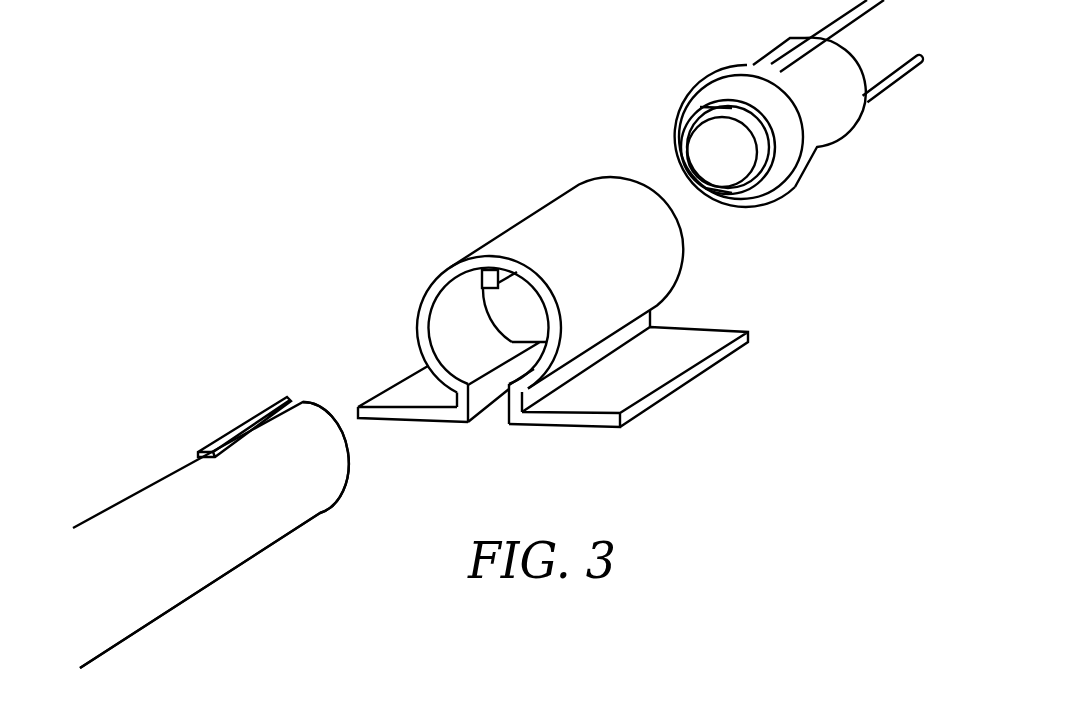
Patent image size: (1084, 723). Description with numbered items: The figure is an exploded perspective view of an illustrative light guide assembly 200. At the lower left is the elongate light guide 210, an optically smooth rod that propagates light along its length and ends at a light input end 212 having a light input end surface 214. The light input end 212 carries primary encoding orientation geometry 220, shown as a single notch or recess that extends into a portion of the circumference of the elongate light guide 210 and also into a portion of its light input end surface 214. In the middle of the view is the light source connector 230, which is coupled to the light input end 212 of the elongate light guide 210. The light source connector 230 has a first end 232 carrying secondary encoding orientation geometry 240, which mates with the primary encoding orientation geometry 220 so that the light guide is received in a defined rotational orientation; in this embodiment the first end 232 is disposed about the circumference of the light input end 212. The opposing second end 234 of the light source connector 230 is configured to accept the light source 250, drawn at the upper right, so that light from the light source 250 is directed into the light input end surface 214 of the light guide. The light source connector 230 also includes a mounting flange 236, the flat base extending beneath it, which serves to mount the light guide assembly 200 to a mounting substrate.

The light guide assembly 200 is at (332, 173).
The elongate light guide 210 is at (262, 509).
The light input end 212 is at (318, 515).
The light input end surface 214 is at (354, 459).
The primary encoding orientation geometry 220 is at (260, 410).
The light source connector 230 is at (544, 280).
The first end 232 is at (423, 332).
The second end 234 is at (632, 172).
The mounting flange 236 is at (633, 382).
The secondary encoding orientation geometry 240 is at (478, 281).
The light source 250 is at (735, 38).